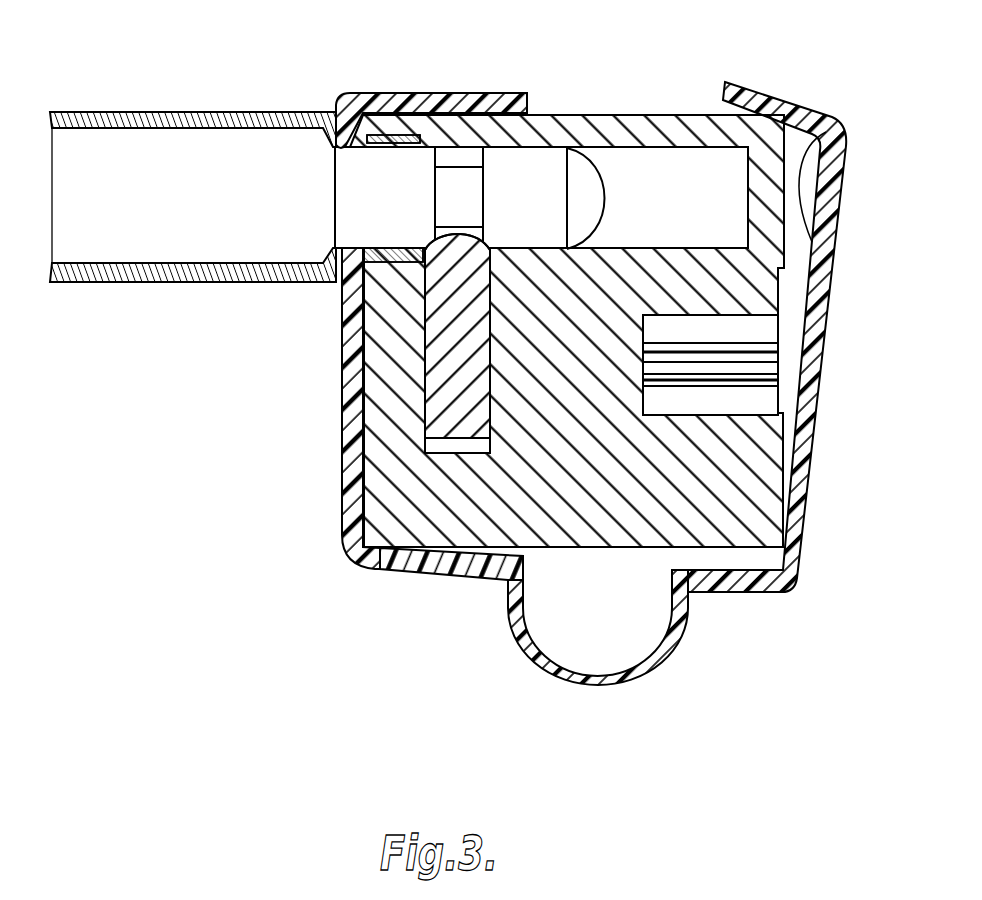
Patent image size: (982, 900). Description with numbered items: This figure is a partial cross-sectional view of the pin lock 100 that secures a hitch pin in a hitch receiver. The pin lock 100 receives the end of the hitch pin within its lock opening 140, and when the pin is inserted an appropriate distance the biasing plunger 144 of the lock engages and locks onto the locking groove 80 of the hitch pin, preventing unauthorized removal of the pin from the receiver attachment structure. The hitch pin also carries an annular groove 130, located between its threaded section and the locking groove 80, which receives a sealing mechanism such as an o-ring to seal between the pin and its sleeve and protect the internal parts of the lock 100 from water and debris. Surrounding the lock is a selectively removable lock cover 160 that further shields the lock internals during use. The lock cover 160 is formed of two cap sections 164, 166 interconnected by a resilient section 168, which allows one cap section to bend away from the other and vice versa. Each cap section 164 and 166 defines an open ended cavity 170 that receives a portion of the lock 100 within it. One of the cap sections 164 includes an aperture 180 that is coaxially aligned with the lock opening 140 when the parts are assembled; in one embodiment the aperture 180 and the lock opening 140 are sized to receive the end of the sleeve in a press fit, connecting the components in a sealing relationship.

The locking groove 80 is at (463, 157).
The pin lock 100 is at (598, 120).
The annular groove 130 is at (165, 112).
The lock opening 140 is at (677, 162).
The biasing plunger 144 is at (425, 348).
The lock cover 160 is at (340, 568).
The cap section 164 is at (342, 443).
The cap section 166 is at (820, 397).
The resilient section 168 is at (616, 684).
The open ended cavity 170 is at (817, 127).
The aperture 180 is at (340, 148).